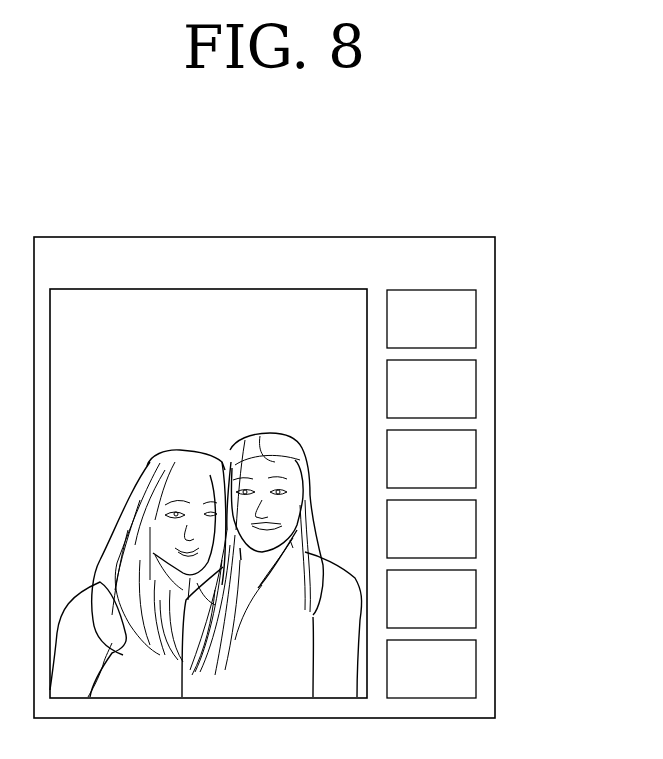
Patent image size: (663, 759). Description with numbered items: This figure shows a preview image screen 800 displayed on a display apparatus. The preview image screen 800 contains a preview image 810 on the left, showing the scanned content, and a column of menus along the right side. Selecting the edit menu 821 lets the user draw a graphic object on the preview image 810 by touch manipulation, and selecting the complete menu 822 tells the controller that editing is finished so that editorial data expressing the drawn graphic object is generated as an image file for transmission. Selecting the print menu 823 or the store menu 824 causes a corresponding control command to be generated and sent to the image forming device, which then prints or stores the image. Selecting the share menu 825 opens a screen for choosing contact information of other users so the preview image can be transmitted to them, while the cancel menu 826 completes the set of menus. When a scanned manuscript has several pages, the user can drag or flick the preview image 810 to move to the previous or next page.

The preview image screen 800 is at (460, 237).
The preview image 810 is at (330, 289).
The edit menu 821 is at (476, 318).
The complete menu 822 is at (476, 388).
The print menu 823 is at (476, 458).
The store menu 824 is at (476, 528).
The share menu 825 is at (476, 598).
The cancel menu 826 is at (476, 668).